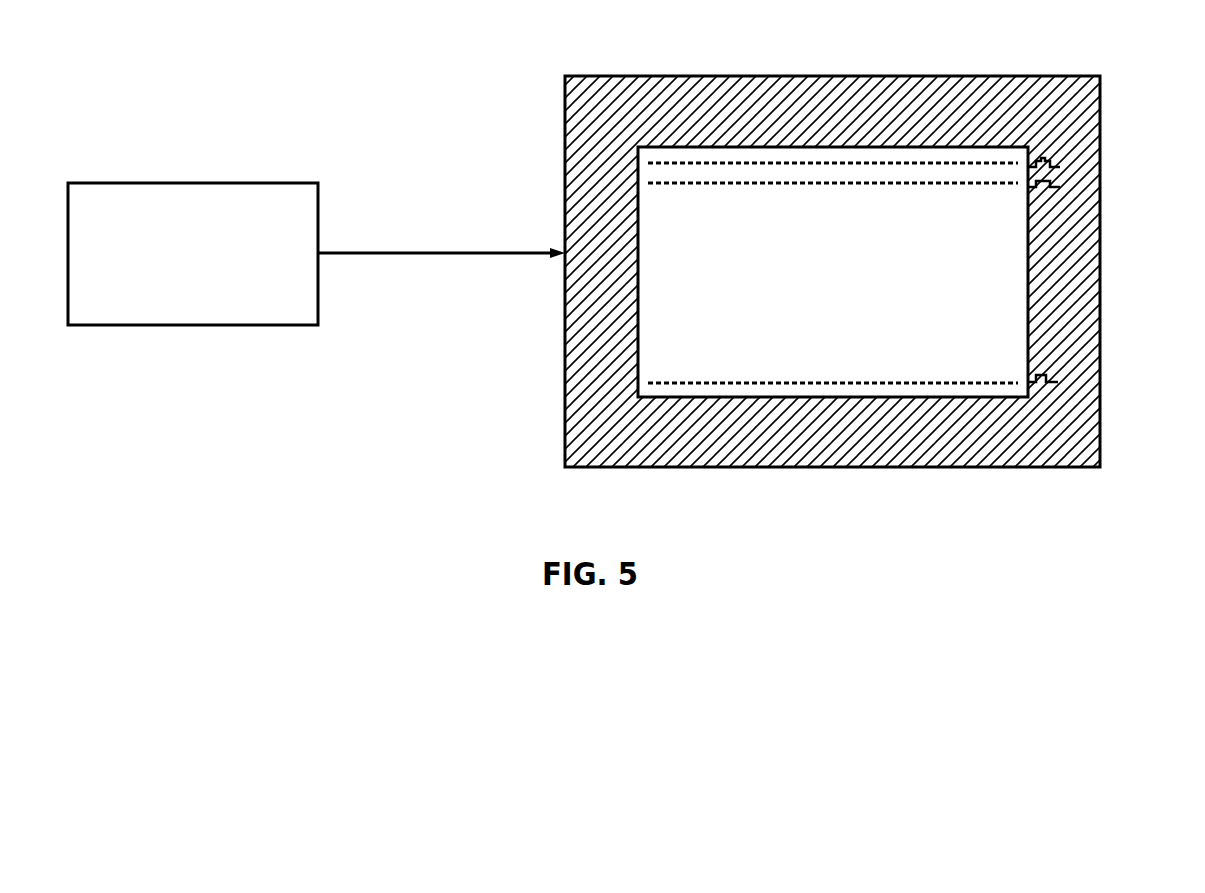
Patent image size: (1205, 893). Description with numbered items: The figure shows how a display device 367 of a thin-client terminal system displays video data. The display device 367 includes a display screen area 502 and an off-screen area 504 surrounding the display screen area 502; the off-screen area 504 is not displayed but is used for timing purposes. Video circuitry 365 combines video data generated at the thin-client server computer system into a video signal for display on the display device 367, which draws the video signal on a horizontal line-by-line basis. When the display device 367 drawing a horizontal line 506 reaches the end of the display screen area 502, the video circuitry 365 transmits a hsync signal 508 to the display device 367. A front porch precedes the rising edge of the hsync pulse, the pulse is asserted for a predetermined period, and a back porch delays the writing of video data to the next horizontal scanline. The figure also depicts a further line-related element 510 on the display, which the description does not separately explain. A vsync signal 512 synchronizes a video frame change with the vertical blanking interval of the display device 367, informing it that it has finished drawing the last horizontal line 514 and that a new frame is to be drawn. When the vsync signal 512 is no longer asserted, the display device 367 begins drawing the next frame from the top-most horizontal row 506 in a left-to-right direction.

The display device 367 is at (636, 50).
The off-screen area 504 is at (582, 163).
The display screen area 502 is at (640, 348).
The horizontal line 506 is at (757, 145).
The hsync signal 508 is at (1045, 140).
The second sensor line 510 is at (975, 197).
The last horizontal line 514 is at (973, 370).
The vsync signal 512 is at (1070, 378).
The video circuitry 365 is at (316, 254).